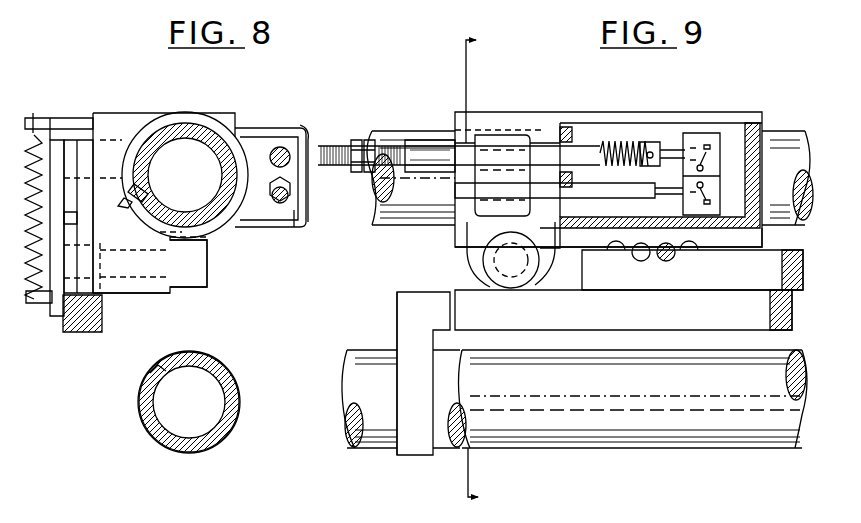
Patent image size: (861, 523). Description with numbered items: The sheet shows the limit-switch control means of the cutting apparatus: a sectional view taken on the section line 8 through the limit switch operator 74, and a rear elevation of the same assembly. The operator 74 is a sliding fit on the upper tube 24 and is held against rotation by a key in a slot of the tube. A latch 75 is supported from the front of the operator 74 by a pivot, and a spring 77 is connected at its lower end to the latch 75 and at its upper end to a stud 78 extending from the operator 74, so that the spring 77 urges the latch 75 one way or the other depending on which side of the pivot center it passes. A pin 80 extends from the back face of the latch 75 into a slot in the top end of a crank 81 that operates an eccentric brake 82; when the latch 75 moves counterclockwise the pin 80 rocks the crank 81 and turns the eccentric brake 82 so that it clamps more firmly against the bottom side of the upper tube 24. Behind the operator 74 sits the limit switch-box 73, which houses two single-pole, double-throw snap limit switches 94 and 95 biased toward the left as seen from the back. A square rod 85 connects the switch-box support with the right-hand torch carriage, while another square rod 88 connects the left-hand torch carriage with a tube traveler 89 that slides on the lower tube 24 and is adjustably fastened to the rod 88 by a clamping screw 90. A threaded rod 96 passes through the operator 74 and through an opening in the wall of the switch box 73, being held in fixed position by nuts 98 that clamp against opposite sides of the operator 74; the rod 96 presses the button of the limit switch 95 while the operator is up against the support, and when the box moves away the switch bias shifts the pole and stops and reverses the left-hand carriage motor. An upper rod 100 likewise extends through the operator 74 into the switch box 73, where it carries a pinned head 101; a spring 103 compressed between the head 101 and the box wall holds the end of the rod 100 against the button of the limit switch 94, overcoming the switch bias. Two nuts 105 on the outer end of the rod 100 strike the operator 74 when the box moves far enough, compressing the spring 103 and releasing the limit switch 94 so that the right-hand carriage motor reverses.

In FIG. 9, the section line 8 is at (481, 270).
In FIG. 8, the upper tube 24 is at (215, 128).
In FIG. 9, the upper tube 24 is at (415, 130).
In FIG. 8, the limit switch-box 73 is at (306, 128).
In FIG. 9, the limit switch-box 73 is at (695, 112).
In FIG. 8, the limit switch operator 74 is at (250, 137).
In FIG. 9, the limit switch operator 74 is at (480, 125).
In FIG. 8, the latch 75 is at (42, 231).
In FIG. 8, the spring 77 is at (40, 134).
In FIG. 8, the stud 78 is at (65, 126).
In FIG. 8, the pin 80 is at (82, 219).
In FIG. 8, the crank 81 is at (73, 235).
In FIG. 8, the eccentric brake 82 is at (192, 276).
In FIG. 9, the eccentric brake 82 is at (486, 250).
In FIG. 8, the square rod 85 is at (118, 283).
In FIG. 9, the square rod 85 is at (755, 262).
In FIG. 8, the square rod 88 is at (104, 311).
In FIG. 9, the square rod 88 is at (700, 300).
In FIG. 9, the tube traveler 89 is at (416, 440).
In FIG. 9, the clamping screw 90 is at (670, 260).
In FIG. 9, the limit switch 94 is at (712, 140).
In FIG. 9, the limit switch 95 is at (745, 232).
In FIG. 8, the rod 96 is at (292, 197).
In FIG. 9, the rod 96 is at (625, 198).
In FIG. 8, the nuts 98 is at (297, 225).
In FIG. 9, the nuts 98 is at (458, 215).
In FIG. 8, the upper rod 100 is at (290, 155).
In FIG. 9, the upper rod 100 is at (548, 160).
In FIG. 9, the head 101 is at (655, 145).
In FIG. 9, the spring 103 is at (610, 142).
In FIG. 9, the nuts 105 is at (370, 140).